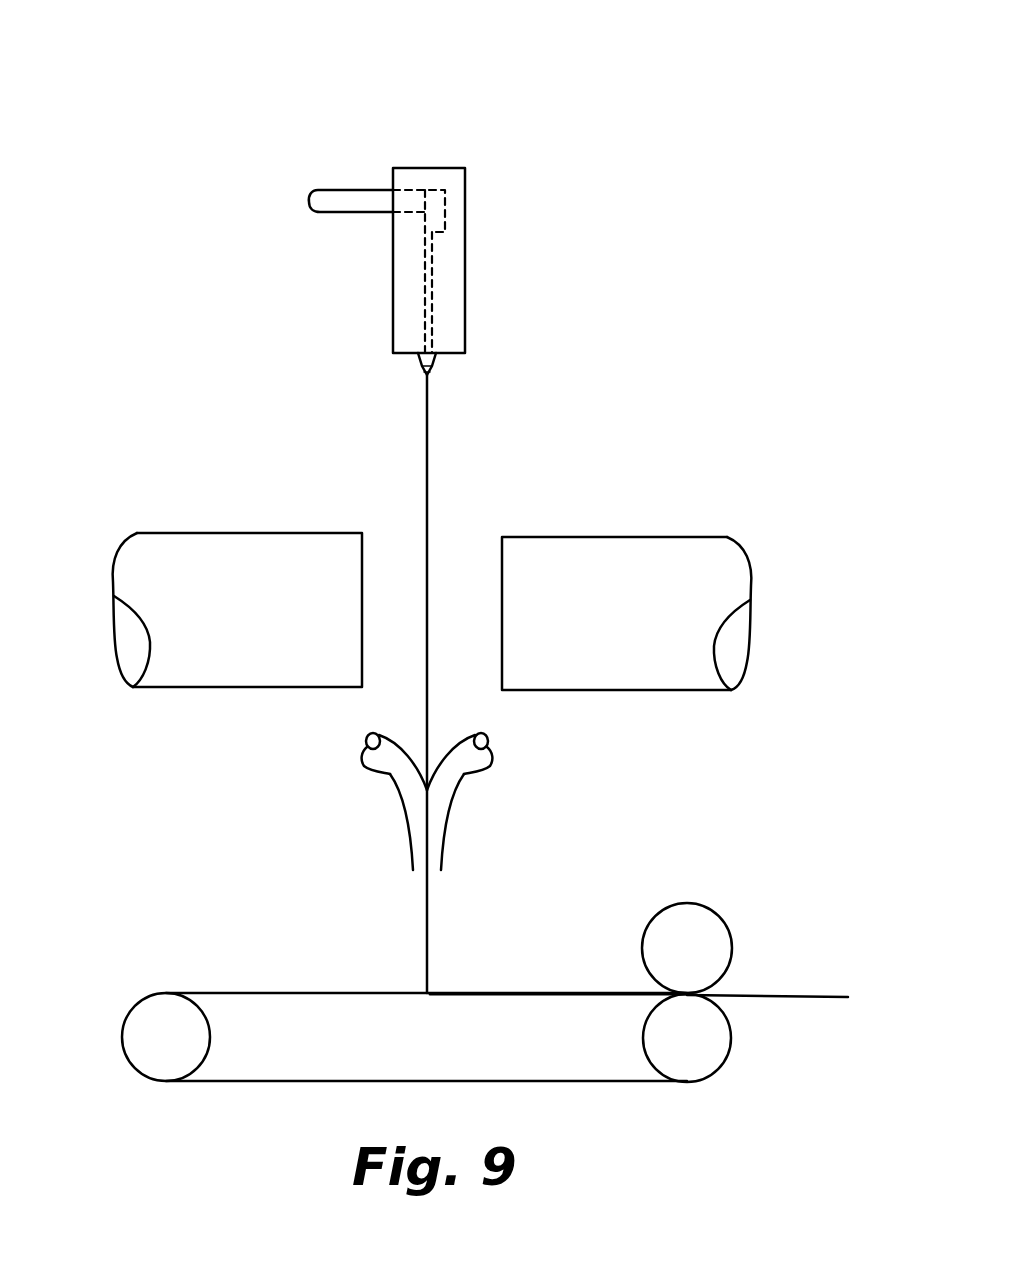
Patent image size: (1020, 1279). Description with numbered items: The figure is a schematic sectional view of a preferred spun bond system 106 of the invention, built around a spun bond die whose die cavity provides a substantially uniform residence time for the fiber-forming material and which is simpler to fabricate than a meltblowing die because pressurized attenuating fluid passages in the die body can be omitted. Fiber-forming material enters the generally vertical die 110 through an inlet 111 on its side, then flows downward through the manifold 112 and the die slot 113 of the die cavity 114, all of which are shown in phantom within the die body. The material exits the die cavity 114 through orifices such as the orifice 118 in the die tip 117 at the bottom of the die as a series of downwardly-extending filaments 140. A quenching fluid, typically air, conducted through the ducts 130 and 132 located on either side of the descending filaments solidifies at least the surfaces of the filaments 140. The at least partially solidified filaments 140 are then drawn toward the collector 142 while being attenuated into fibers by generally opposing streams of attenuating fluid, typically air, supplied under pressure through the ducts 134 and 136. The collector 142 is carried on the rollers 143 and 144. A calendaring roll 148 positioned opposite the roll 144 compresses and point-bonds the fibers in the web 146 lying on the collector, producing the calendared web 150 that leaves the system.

The spun bond system 106 is at (468, 88).
The die 110 is at (466, 252).
The inlet 111 is at (354, 190).
The manifold 112 is at (455, 198).
The die slot 113 is at (434, 317).
The die cavity 114 is at (410, 273).
The die tip 117 is at (418, 358).
The orifice 118 is at (438, 358).
The duct 130 is at (263, 533).
The duct 132 is at (647, 537).
The duct 134 is at (392, 776).
The duct 136 is at (462, 776).
The filaments 140 is at (427, 528).
The collector 142 is at (300, 993).
The roller 143 is at (137, 1050).
The roller 144 is at (709, 1062).
The web 146 is at (517, 993).
The calendaring roll 148 is at (714, 930).
The calendared web 150 is at (820, 996).